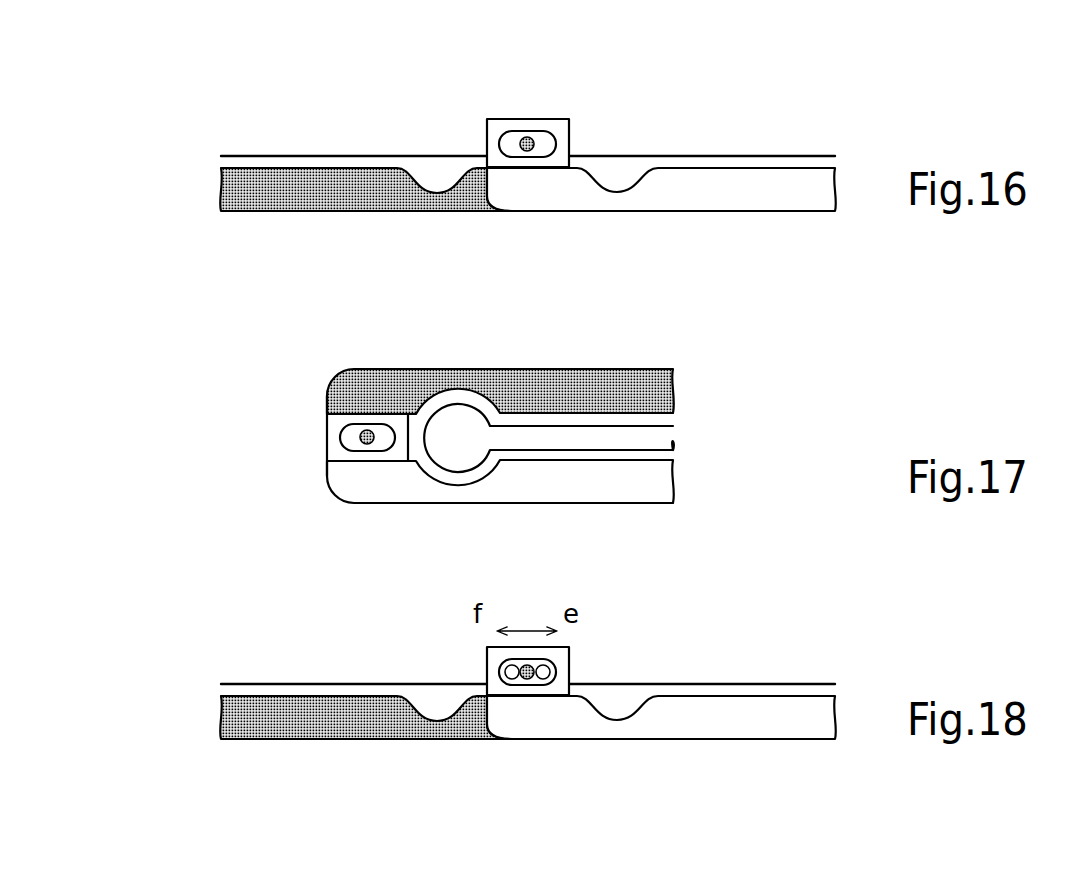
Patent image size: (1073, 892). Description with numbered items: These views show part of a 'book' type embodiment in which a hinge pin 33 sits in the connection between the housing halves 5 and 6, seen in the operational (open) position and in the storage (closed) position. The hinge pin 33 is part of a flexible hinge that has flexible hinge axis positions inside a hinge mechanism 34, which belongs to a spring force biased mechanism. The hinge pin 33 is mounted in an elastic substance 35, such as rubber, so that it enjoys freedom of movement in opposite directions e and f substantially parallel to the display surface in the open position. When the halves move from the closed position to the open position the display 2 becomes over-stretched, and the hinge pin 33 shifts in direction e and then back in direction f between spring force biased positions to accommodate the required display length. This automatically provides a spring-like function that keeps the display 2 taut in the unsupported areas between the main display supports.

In FIG. 16, the display 2 is at (365, 155).
In FIG. 17, the display 2 is at (507, 450).
In FIG. 18, the display 2 is at (683, 684).
In FIG. 16, the housing half 5 is at (377, 200).
In FIG. 17, the housing half 5 is at (696, 385).
In FIG. 16, the housing half 6 is at (567, 206).
In FIG. 17, the housing half 6 is at (696, 480).
In FIG. 18, the housing half 6 is at (323, 753).
In FIG. 16, the hinge pin 33 is at (524, 134).
In FIG. 17, the hinge pin 33 is at (363, 432).
In FIG. 18, the hinge pin 33 is at (500, 665).
In FIG. 16, the hinge mechanism 34 is at (500, 143).
In FIG. 17, the hinge mechanism 34 is at (348, 437).
In FIG. 16, the elastic substance 35 is at (542, 143).
In FIG. 17, the elastic substance 35 is at (387, 442).